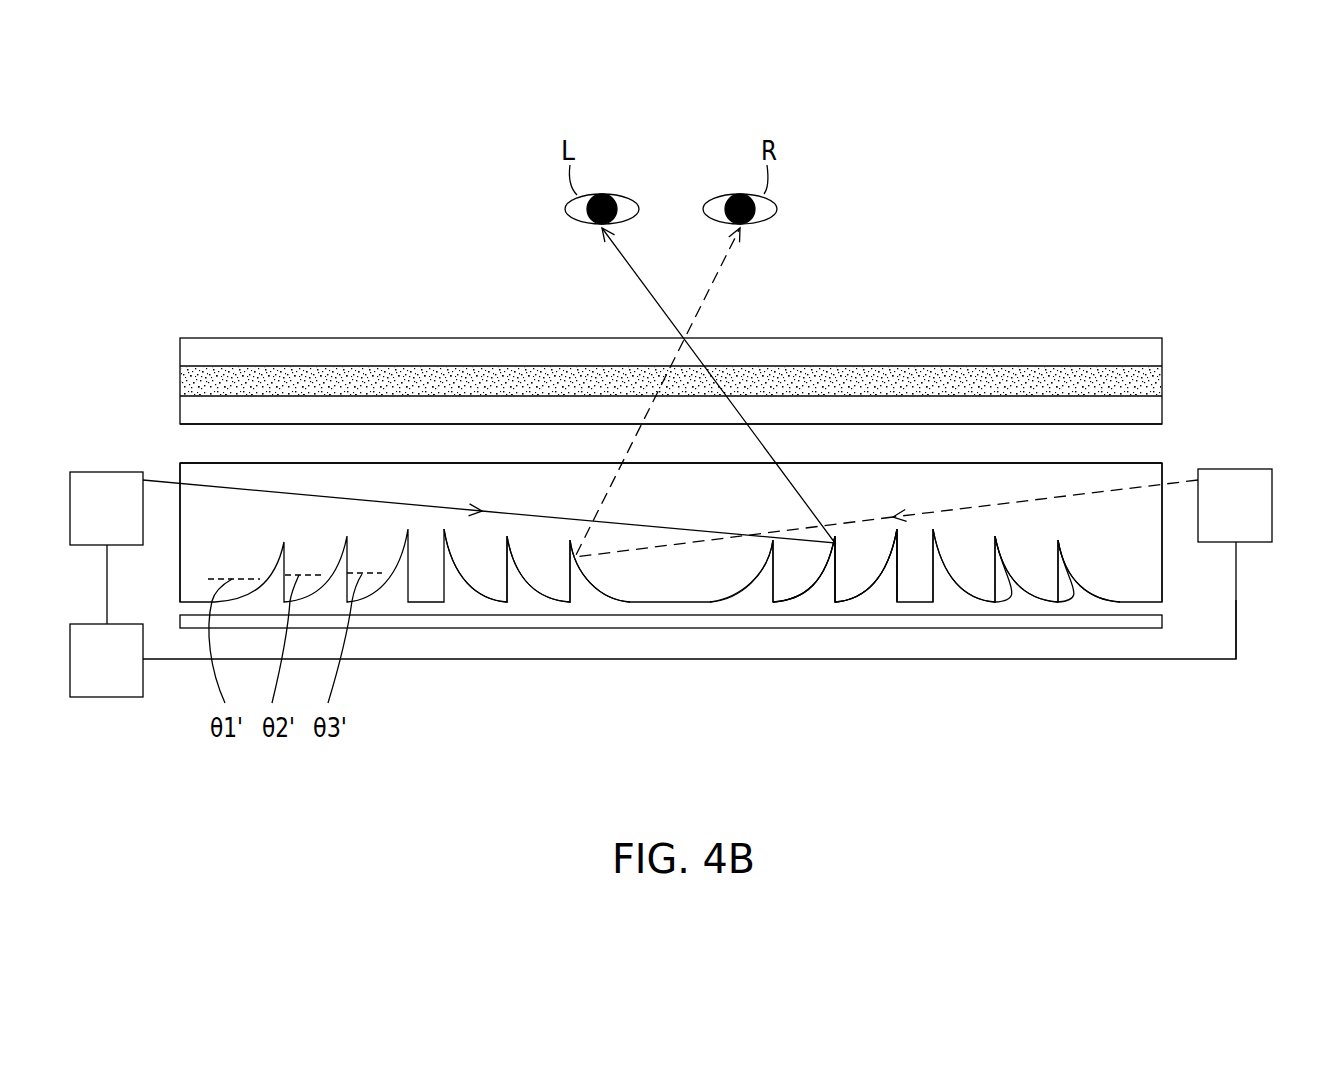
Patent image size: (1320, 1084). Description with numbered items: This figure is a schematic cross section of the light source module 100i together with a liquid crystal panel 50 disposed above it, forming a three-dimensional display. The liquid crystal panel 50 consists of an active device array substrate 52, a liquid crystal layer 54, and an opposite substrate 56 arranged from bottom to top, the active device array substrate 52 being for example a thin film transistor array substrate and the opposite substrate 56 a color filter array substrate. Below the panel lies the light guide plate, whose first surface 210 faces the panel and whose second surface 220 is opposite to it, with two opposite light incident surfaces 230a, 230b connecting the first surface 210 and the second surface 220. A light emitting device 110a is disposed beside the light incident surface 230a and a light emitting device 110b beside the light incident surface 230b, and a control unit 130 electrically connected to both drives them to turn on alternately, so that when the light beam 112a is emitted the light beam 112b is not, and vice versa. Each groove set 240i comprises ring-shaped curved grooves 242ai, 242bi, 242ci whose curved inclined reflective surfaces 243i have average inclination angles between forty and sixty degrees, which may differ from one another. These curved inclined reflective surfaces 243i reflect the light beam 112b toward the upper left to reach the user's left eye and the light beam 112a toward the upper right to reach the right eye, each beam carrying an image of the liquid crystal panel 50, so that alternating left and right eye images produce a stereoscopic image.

The liquid crystal panel 50 is at (480, 240).
The active device array substrate 52 is at (485, 408).
The liquid crystal layer 54 is at (432, 380).
The opposite substrate 56 is at (371, 352).
The light source module 100i is at (1250, 620).
The light emitting device 110a is at (1247, 488).
The light emitting device 110b is at (92, 485).
The light beam 112a is at (1175, 478).
The light beam 112b is at (160, 478).
The control unit 130 is at (105, 682).
The first surface 210 is at (1088, 461).
The second surface 220 is at (657, 605).
The light incident surface 230a is at (1164, 582).
The light incident surface 230b is at (178, 580).
The groove set 240i is at (993, 747).
The curved groove 242ai is at (762, 588).
The curved groove 242bi is at (821, 590).
The curved groove 242ci is at (883, 589).
The curved inclined reflective surface 243i is at (479, 584).